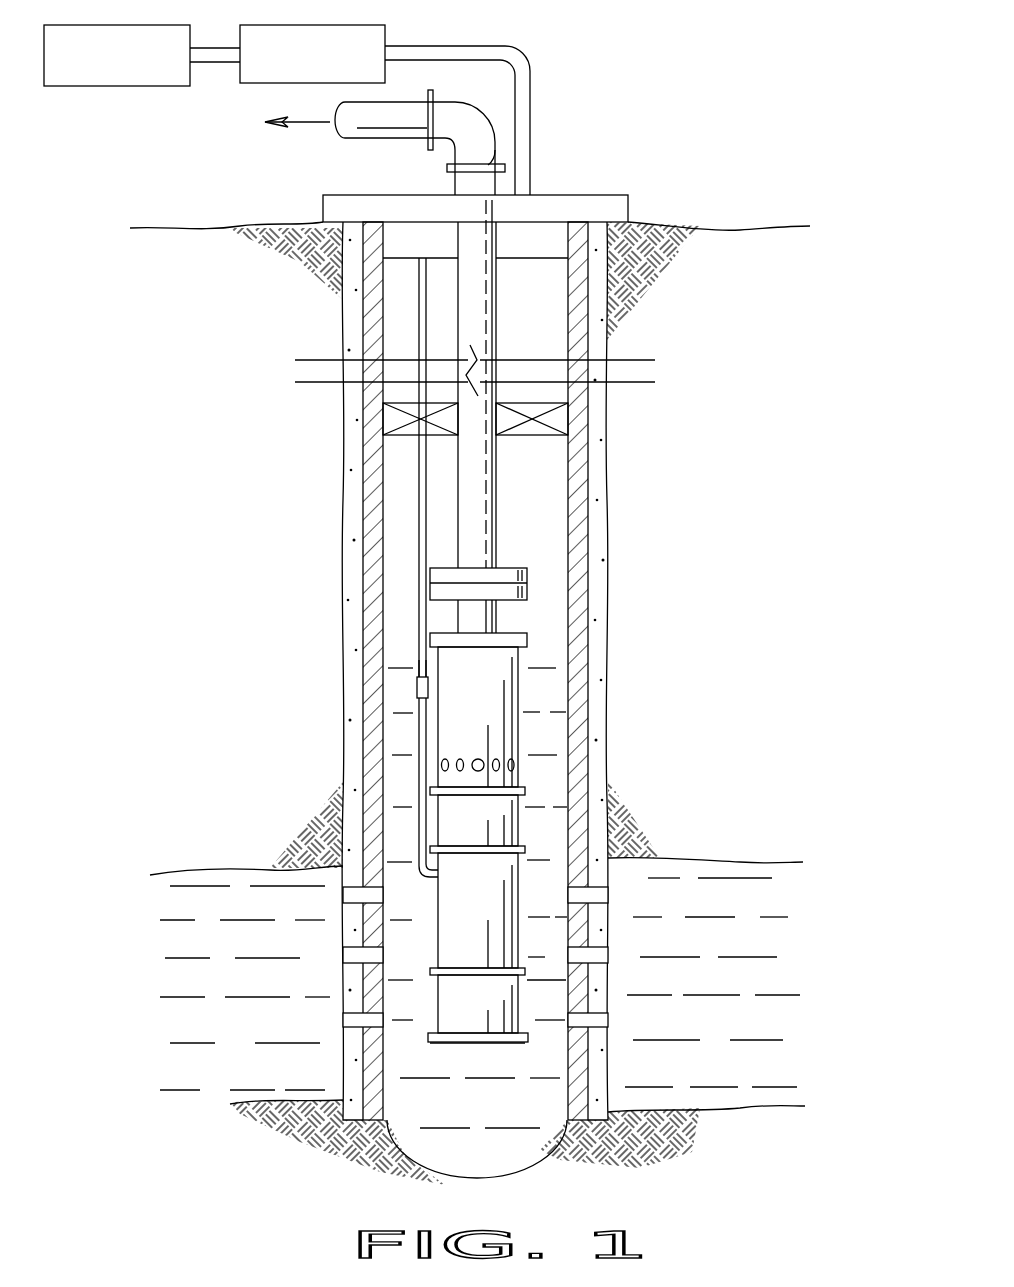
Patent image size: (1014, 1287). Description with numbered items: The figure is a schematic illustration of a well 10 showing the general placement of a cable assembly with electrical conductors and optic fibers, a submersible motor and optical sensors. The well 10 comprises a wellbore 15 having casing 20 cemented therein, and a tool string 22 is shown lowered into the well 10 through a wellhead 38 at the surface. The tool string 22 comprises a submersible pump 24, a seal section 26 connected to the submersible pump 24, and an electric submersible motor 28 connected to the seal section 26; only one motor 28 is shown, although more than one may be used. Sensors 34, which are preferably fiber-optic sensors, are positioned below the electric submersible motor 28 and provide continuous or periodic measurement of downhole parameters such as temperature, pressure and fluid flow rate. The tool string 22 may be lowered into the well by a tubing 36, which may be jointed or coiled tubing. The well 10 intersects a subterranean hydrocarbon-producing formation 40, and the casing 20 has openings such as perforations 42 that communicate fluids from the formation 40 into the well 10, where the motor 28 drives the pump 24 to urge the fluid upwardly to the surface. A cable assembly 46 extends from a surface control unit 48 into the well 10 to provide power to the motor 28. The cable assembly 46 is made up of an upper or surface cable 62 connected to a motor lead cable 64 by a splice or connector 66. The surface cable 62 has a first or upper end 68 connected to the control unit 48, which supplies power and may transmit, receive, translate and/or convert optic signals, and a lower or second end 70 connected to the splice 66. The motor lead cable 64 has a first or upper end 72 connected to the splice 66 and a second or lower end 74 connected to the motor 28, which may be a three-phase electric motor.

The well 10 is at (292, 420).
The wellbore 15 is at (607, 452).
The casing 20 is at (578, 337).
The tool string 22 is at (548, 608).
The submersible pump 24 is at (518, 742).
The seal section 26 is at (522, 832).
The electric submersible motor 28 is at (522, 932).
The sensors 34 is at (522, 1017).
The tubing 36 is at (497, 527).
The wellhead 38 is at (608, 195).
The subterranean hydrocarbon-producing formation 40 is at (237, 886).
The perforations 42 is at (598, 894).
The cable assembly 46 is at (334, 587).
The surface control unit 48 is at (105, 86).
The surface cable 62 is at (419, 493).
The motor lead cable 64 is at (419, 807).
The splice 66 is at (417, 690).
The upper end of surface cable 68 is at (192, 48).
The lower end of surface cable 70 is at (422, 677).
The upper end of motor lead cable 72 is at (422, 700).
The lower end of motor lead cable 74 is at (432, 880).